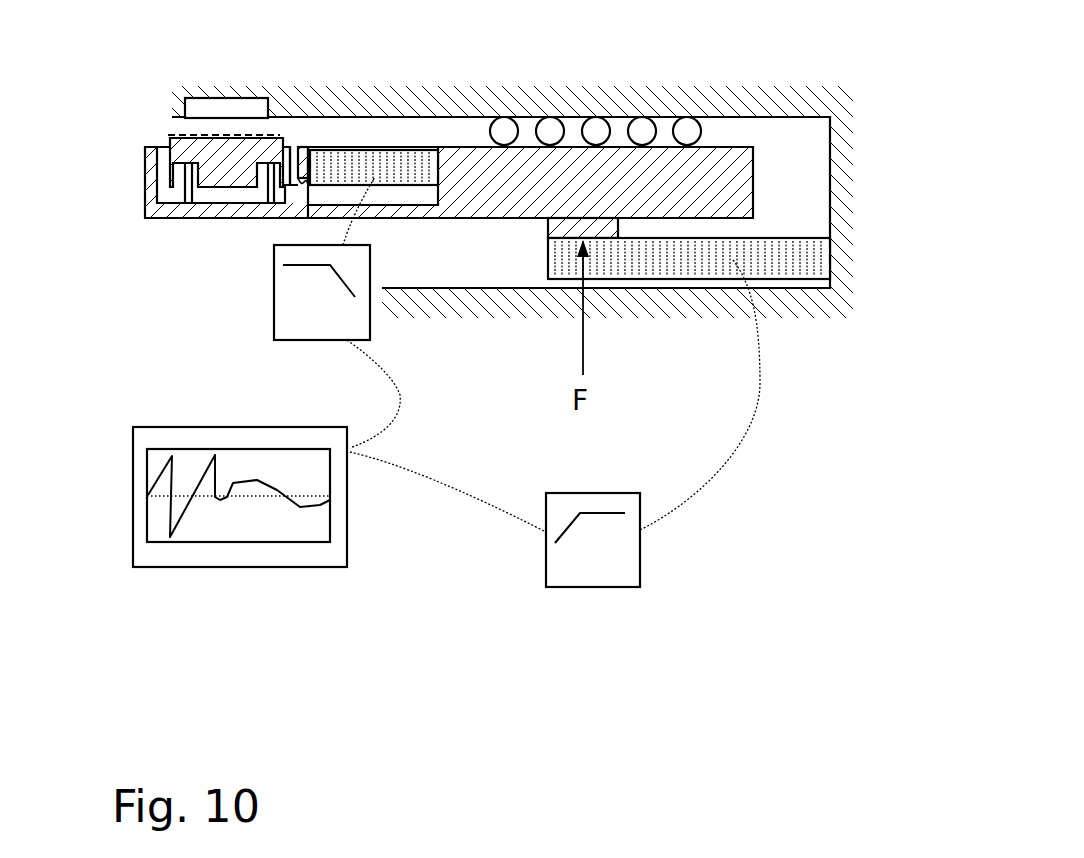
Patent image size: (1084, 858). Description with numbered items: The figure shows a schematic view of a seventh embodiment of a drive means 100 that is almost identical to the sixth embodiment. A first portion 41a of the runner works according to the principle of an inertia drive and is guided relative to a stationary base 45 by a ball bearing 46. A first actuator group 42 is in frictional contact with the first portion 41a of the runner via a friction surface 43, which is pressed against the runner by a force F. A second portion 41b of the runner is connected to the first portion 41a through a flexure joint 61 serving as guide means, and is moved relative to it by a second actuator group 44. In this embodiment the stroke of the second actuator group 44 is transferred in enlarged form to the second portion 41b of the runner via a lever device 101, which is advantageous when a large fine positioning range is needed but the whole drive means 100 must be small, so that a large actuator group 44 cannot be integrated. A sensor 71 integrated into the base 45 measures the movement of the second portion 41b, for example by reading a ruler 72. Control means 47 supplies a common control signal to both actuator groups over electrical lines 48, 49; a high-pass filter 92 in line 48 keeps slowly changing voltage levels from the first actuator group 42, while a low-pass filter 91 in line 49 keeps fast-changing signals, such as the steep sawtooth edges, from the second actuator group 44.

The drive means 100 is at (137, 652).
The first portion of the runner 41a is at (718, 160).
The second portion of the runner 41b is at (183, 155).
The actuator group 42 is at (780, 248).
The friction surface 43 is at (592, 232).
The second actuator group 44 is at (410, 160).
The stationary base 45 is at (850, 303).
The ball bearing 46 is at (644, 123).
The control means 47 is at (160, 433).
The electrical line 48 is at (760, 383).
The electrical line 49 is at (397, 383).
The flexure joint 61 is at (263, 192).
The sensor 71 is at (213, 100).
The ruler 72 is at (177, 133).
The low-pass filter 91 is at (292, 310).
The high-pass filter 92 is at (557, 510).
The lever device 101 is at (300, 178).